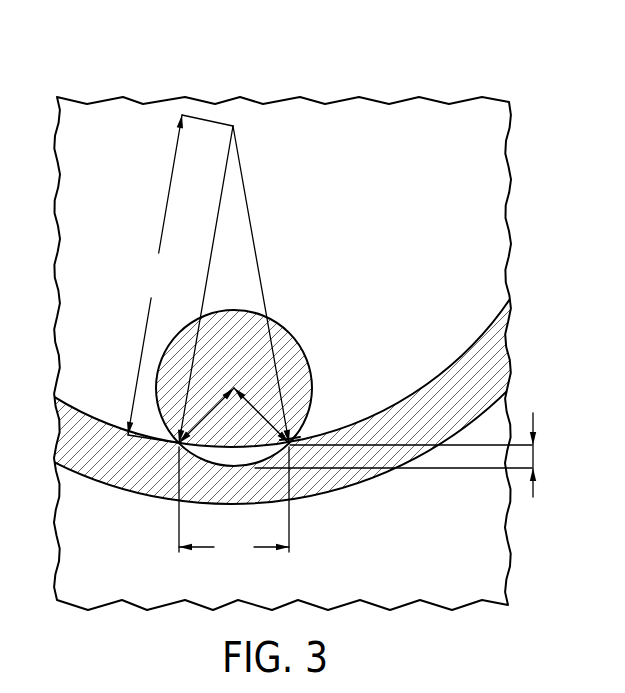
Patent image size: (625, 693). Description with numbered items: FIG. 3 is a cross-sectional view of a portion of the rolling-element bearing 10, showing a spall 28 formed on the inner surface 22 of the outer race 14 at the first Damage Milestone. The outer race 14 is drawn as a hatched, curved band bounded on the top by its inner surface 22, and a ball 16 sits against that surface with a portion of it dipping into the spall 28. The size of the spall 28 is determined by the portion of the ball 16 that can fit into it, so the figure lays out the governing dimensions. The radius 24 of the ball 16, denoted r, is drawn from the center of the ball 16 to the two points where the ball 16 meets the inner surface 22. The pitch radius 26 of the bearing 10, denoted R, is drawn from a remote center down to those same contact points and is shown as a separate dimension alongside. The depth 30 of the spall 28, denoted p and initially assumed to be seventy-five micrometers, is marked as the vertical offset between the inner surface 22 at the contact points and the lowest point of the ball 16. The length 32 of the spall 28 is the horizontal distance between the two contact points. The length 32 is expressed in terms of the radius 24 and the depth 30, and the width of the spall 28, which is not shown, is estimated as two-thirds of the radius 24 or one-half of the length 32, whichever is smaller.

The rolling-element bearing 10 is at (266, 309).
The outer race 14 is at (497, 365).
The ball 16 is at (292, 336).
The inner surface 22 is at (428, 382).
The radius of the ball 24 is at (248, 405).
The pitch radius 26 is at (208, 279).
The spall 28 is at (284, 450).
The depth of the spall 30 is at (538, 458).
The length of the spall 32 is at (234, 505).